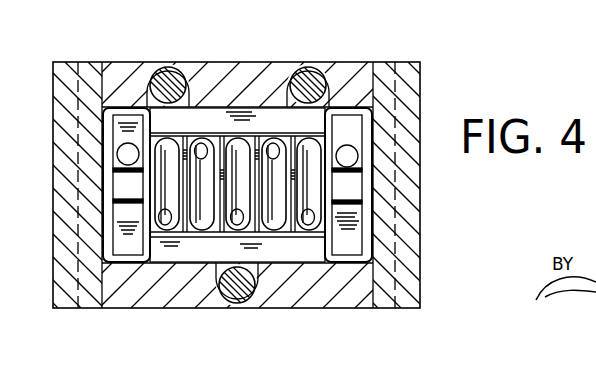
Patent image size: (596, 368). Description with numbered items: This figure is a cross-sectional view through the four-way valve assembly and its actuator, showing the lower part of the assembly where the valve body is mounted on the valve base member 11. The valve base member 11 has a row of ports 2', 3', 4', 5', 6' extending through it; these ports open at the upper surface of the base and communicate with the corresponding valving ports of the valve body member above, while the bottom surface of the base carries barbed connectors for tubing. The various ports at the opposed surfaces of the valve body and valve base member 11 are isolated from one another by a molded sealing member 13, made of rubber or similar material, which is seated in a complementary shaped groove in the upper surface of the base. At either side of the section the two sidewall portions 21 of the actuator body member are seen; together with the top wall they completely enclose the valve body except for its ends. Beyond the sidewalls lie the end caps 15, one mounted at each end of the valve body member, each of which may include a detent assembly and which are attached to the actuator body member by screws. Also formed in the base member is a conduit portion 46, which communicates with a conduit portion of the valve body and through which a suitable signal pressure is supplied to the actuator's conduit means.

The valve base member 11 is at (179, 52).
The sidewall portions 21 is at (247, 76).
The end cap 15 is at (63, 199).
The conduit portion 46 is at (122, 143).
The sealing member 13 is at (126, 264).
The port 2' is at (171, 200).
The port 3' is at (205, 170).
The port 4' is at (230, 200).
The port 5' is at (274, 170).
The port 6' is at (305, 201).